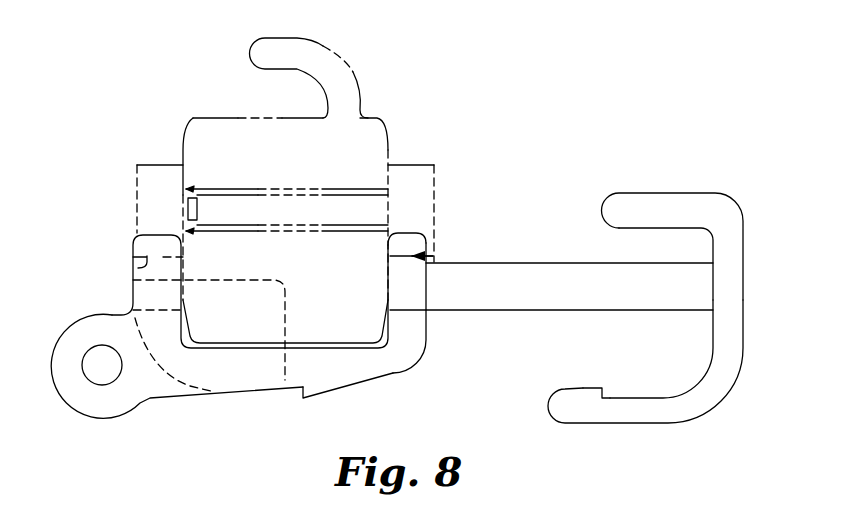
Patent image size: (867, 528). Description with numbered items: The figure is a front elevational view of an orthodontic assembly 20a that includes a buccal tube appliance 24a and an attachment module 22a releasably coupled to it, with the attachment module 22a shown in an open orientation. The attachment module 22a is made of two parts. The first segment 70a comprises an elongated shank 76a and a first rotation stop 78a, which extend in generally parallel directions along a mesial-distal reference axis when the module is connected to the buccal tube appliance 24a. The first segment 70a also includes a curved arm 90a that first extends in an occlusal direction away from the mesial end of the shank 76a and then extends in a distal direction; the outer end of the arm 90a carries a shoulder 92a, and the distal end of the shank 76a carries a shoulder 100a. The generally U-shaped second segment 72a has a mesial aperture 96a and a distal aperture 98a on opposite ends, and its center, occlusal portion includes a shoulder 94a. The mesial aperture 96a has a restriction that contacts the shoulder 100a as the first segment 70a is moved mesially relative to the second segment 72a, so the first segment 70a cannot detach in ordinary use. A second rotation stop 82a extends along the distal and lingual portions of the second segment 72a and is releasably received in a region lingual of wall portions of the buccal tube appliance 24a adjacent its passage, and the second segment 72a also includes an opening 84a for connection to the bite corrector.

The orthodontic assembly 20a is at (587, 123).
The buccal tube appliance 24a is at (188, 116).
The second segment 72a is at (108, 312).
The distal aperture 98a is at (133, 267).
The attachment module 22a is at (153, 403).
The shoulder 94a is at (297, 393).
The opening 84a is at (87, 377).
The mesial aperture 96a is at (398, 307).
The shoulder 100a is at (435, 258).
The second rotation stop 82a is at (232, 313).
The elongated shank 76a is at (535, 297).
The first segment 70a is at (749, 258).
The first rotation stop 78a is at (648, 205).
The curved arm 90a is at (647, 410).
The shoulder 92a is at (606, 395).